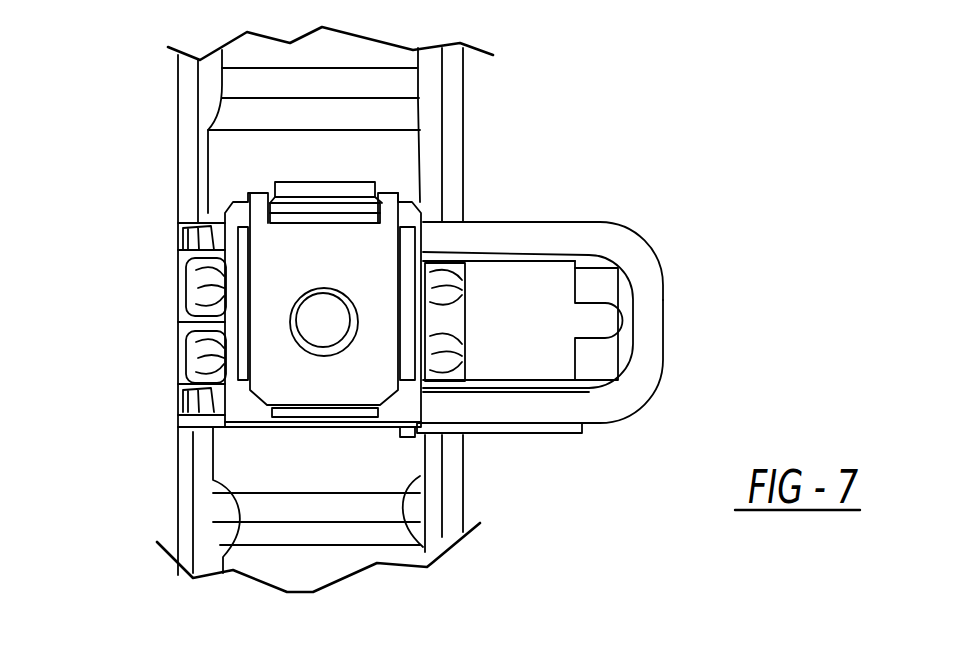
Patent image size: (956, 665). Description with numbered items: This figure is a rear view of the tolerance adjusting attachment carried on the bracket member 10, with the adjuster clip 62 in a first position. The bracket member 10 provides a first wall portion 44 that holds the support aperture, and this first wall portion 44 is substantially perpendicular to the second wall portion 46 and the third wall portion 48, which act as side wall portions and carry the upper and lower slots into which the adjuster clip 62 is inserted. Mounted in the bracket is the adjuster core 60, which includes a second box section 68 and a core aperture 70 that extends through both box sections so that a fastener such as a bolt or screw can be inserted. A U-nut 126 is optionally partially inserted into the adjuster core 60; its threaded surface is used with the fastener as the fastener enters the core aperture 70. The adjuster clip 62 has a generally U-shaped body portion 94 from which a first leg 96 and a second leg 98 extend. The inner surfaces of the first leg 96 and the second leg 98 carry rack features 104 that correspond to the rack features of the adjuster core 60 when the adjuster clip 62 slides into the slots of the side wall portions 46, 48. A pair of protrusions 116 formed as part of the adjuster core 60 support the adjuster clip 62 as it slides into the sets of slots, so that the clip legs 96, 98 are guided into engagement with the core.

The bracket member 10 is at (355, 52).
The first wall portion 44 is at (393, 150).
The second wall portion 46 is at (227, 558).
The third wall portion 48 is at (440, 548).
The adjuster core 60 is at (237, 183).
The adjuster clip 62 is at (648, 247).
The second box section 68 is at (232, 450).
The core aperture 70 is at (335, 343).
The U-shaped body portion 94 is at (650, 302).
The first leg 96 is at (486, 243).
The second leg 98 is at (480, 405).
The rack features 104 is at (497, 268).
The protrusions 116 is at (552, 435).
The U-nut 126 is at (360, 255).